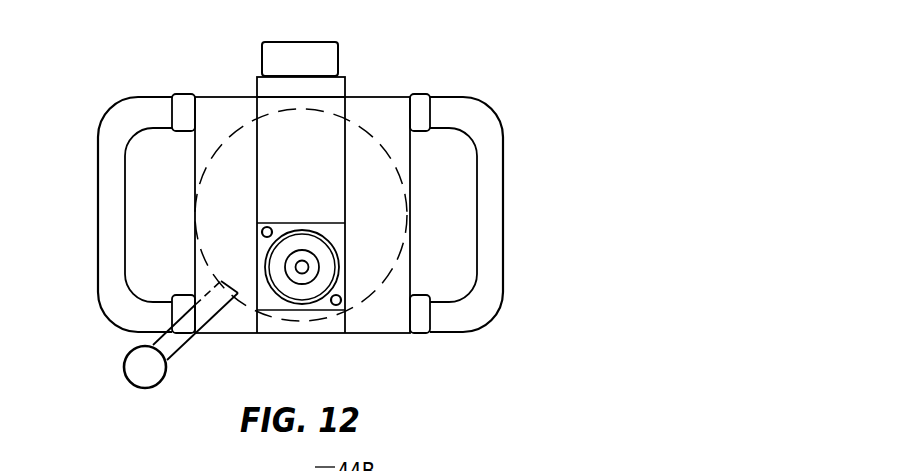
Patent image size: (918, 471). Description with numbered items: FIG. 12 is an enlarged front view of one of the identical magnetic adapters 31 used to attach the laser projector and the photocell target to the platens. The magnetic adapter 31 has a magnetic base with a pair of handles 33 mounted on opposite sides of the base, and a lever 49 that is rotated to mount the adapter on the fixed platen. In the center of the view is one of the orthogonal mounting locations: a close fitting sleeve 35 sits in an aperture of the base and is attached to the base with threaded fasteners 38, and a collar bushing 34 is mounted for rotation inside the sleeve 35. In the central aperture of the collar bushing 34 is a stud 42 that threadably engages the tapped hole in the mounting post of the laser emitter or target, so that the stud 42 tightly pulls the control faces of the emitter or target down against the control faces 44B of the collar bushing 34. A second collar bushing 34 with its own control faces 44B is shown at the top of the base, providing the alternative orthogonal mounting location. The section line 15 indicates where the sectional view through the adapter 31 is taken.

The magnetic adapter 31 is at (505, 391).
The handles 33 is at (294, 207).
The collar bushing 34 is at (306, 208).
The sleeve 35 is at (296, 187).
The threaded fasteners 38 is at (341, 283).
The stud 42 is at (334, 327).
The control faces 44B is at (327, 122).
The lever 49 is at (151, 361).
The section line 15- 15 is at (296, 223).